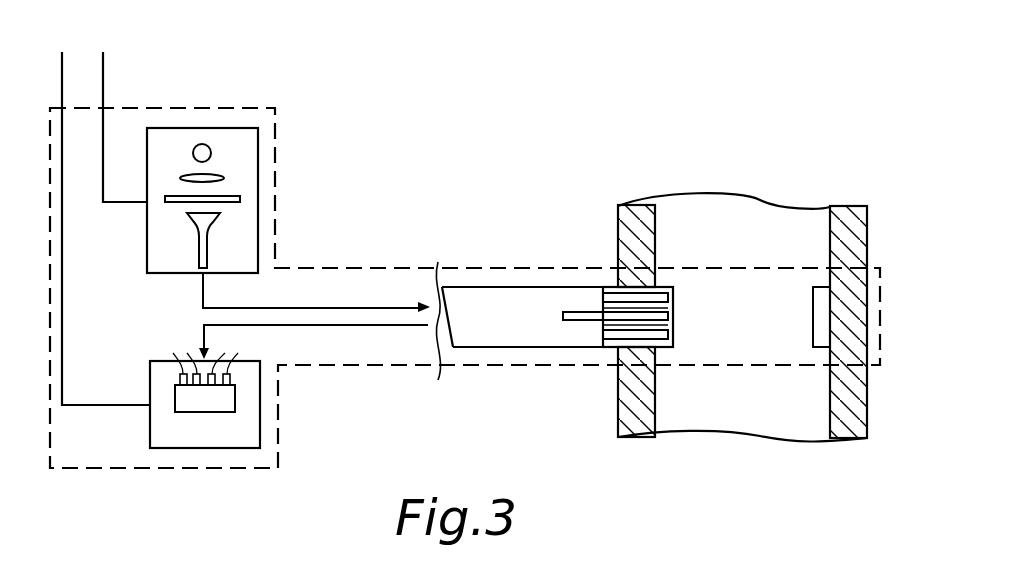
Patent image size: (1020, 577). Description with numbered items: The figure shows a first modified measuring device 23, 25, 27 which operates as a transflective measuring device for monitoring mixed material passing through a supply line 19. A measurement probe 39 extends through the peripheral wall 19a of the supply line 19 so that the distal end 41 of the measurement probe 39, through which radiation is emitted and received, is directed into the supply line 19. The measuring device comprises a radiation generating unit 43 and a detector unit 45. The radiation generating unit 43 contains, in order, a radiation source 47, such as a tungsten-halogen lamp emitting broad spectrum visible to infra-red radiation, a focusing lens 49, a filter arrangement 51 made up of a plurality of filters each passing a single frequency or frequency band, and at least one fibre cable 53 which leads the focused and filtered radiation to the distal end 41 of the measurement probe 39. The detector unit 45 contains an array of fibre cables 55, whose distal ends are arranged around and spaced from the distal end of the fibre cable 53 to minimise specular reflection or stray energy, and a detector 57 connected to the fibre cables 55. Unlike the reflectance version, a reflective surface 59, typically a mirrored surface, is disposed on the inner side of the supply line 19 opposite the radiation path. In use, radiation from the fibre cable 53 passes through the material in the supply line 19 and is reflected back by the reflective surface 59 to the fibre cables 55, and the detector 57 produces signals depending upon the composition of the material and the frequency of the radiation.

The supply line 19 is at (838, 252).
The peripheral wall 19a is at (625, 232).
The first measuring device 23 is at (465, 288).
The second measuring device 25 is at (465, 288).
The third measuring device 27 is at (387, 372).
The measurement probe 39 is at (552, 349).
The distal end 41 is at (673, 323).
The radiation generating unit 43 is at (238, 146).
The detector unit 45 is at (246, 425).
The radiation source 47 is at (192, 152).
The focusing lens 49 is at (224, 178).
The filter arrangement 51 is at (165, 199).
The fibre cable 53 is at (199, 248).
The fibre cables 55 is at (610, 297).
The detector 57 is at (228, 397).
The reflective surface 59 is at (818, 323).